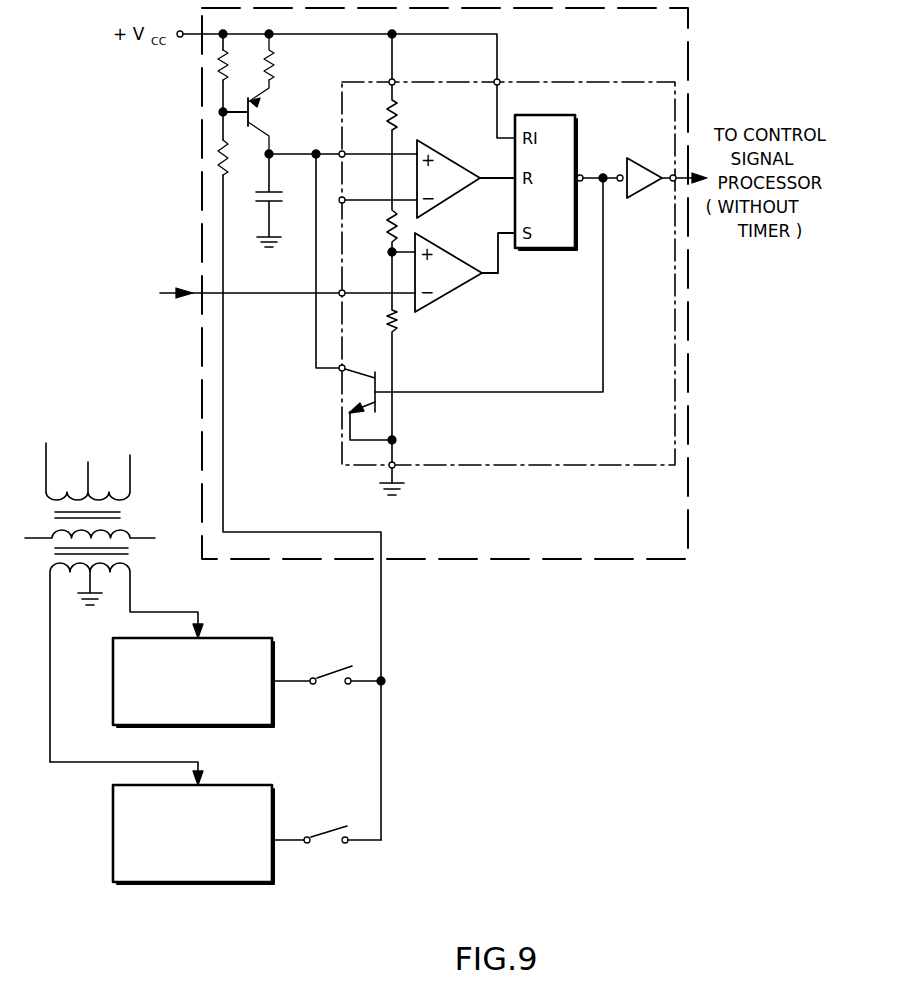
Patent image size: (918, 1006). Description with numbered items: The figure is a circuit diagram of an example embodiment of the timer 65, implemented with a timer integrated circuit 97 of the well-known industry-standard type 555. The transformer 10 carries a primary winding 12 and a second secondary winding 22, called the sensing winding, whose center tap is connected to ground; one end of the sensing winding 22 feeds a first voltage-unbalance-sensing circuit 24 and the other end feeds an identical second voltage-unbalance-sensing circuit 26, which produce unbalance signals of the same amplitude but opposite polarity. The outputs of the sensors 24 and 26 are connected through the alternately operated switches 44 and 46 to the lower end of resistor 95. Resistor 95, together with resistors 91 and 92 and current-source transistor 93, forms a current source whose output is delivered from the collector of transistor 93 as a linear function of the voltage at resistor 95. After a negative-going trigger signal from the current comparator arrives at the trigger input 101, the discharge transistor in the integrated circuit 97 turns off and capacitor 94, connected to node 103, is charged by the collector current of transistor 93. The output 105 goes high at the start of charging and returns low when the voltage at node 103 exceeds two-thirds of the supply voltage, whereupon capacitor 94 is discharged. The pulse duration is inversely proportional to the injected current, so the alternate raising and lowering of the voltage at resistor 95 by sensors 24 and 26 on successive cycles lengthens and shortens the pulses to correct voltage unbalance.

The transformer 10 is at (111, 602).
The transformer secondary winding 12 is at (130, 475).
The second secondary winding 22 is at (130, 585).
The first voltage-unbalance-sensing circuit 24 is at (240, 636).
The second voltage-unbalance-sensing circuit 26 is at (272, 786).
The switch 44 is at (330, 668).
The switch 46 is at (318, 835).
The timer 65 is at (567, 561).
The resistor 91 is at (212, 66).
The resistor 92 is at (276, 68).
The current-source transistor 93 is at (268, 110).
The capacitor 94 is at (276, 204).
The resistor 95 is at (212, 160).
The timer integrated circuit 97 is at (338, 448).
The trigger input 101 is at (163, 289).
The node 103 is at (327, 378).
The output 105 is at (662, 181).
The type 555 timer 555 is at (617, 453).